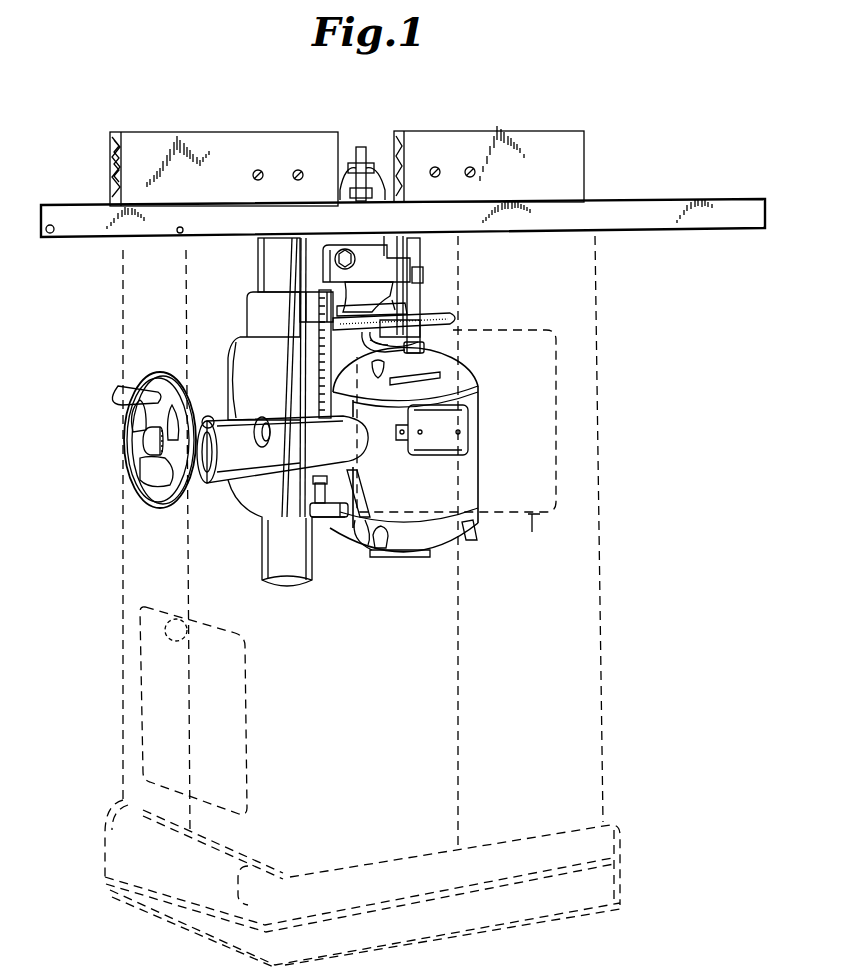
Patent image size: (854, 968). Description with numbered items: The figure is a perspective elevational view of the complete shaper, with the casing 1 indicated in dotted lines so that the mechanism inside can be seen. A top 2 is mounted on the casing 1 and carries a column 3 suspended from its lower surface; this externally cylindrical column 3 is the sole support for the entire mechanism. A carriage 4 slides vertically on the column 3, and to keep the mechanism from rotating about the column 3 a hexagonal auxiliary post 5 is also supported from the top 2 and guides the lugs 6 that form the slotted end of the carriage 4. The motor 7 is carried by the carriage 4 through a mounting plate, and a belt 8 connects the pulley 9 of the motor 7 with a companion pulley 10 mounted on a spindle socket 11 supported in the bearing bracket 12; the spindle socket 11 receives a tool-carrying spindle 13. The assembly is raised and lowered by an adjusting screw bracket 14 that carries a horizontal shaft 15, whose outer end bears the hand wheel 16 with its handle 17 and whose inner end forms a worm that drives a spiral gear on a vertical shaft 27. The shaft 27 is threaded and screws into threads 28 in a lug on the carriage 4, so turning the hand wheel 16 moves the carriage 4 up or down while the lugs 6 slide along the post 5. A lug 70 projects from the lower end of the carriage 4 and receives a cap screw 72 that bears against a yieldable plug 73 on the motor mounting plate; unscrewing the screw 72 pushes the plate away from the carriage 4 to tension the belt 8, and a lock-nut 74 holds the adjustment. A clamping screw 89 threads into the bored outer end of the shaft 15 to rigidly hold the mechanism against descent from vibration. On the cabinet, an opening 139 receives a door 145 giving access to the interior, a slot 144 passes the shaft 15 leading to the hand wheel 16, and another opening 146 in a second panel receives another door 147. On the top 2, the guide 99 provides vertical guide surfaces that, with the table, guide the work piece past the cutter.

The casing 1 is at (598, 582).
The top 2 is at (633, 216).
The column 3 is at (262, 266).
The carriage 4 is at (246, 352).
The auxiliary post 5 is at (424, 296).
The lugs 6 is at (422, 266).
The motor 7 is at (470, 472).
The belt 8 is at (460, 316).
The pulley 9 is at (440, 310).
The companion pulley 10 is at (372, 330).
The spindle socket 11 is at (372, 244).
The bearing bracket 12 is at (398, 250).
The tool-carrying spindle 13 is at (363, 158).
The adjusting screw bracket 14 is at (222, 487).
The horizontal shaft 15 is at (263, 418).
The hand wheel 16 is at (130, 452).
The handle 17 is at (128, 400).
The shaft 27 is at (318, 330).
The threads 28 is at (368, 292).
The lug 70 is at (326, 518).
The cap screw 72 is at (369, 551).
The yieldable plug 73 is at (358, 510).
The lock-nut 74 is at (338, 520).
The clamping screw 89 is at (148, 450).
The guide 99 is at (300, 142).
The opening 139 is at (248, 768).
The slot 144 is at (206, 415).
The door 145 is at (232, 722).
The opening 146 is at (533, 538).
The door 147 is at (540, 432).